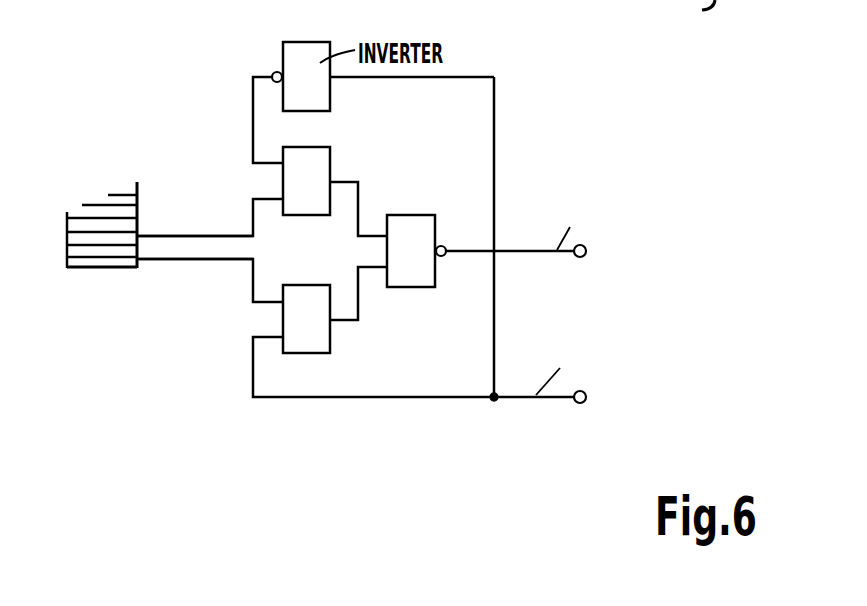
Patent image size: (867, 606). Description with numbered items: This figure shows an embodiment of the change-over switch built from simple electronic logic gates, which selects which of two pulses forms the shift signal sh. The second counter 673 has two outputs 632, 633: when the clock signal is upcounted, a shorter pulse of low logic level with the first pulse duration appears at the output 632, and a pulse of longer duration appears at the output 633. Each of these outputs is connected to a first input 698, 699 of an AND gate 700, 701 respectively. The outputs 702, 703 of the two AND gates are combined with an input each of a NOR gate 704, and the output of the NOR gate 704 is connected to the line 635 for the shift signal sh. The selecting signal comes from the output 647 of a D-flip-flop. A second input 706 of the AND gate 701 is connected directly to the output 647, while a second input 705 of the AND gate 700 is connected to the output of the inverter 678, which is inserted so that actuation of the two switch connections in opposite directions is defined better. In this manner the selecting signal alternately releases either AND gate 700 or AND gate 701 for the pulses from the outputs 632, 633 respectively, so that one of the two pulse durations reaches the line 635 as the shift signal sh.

The inverter 678 is at (309, 41).
The second input of the AND gate 700 705 is at (252, 137).
The AND gate 700 is at (308, 145).
The AND gate 701 is at (300, 355).
The output of the AND gate 700 702 is at (350, 178).
The output of the AND gate 701 703 is at (342, 322).
The NOR gate 704 is at (418, 213).
The first input of the AND gate 700 698 is at (263, 200).
The first input of the AND gate 701 699 is at (266, 300).
The second input of the AND gate 701 706 is at (250, 361).
The output 632 is at (160, 234).
The output 633 is at (162, 261).
The second counter 673 is at (67, 237).
The line 635 is at (579, 258).
The output of the D-flip-flop 647 is at (588, 402).